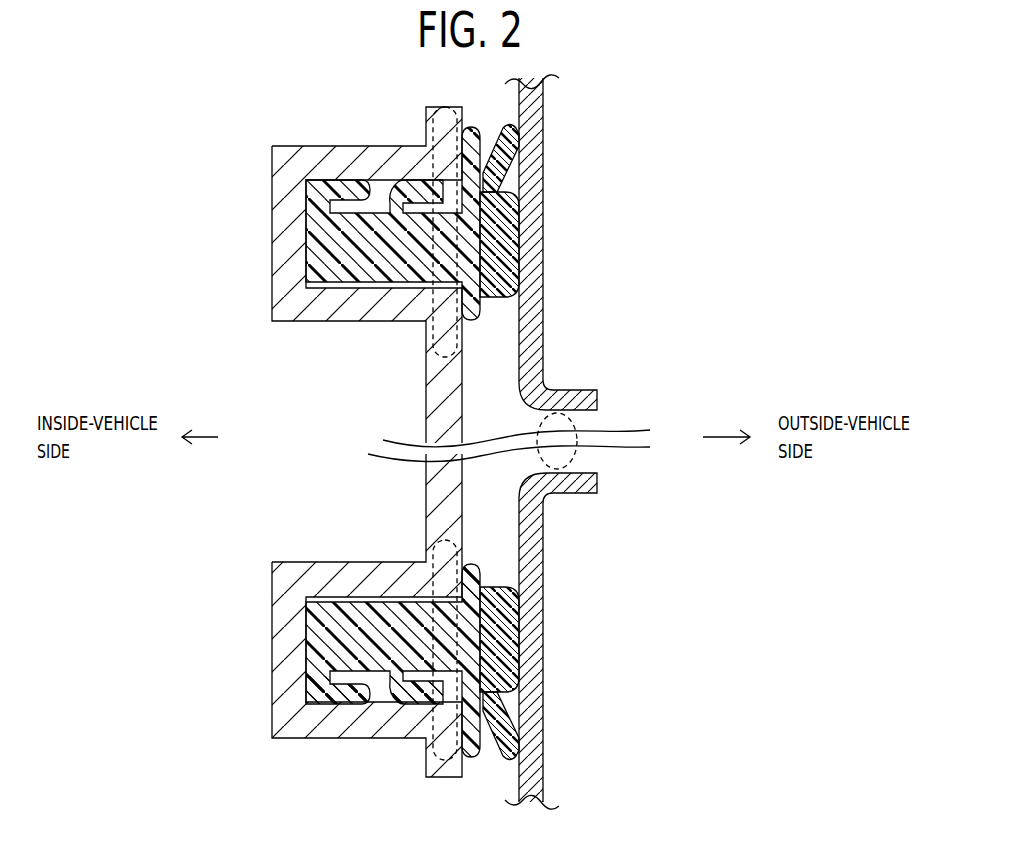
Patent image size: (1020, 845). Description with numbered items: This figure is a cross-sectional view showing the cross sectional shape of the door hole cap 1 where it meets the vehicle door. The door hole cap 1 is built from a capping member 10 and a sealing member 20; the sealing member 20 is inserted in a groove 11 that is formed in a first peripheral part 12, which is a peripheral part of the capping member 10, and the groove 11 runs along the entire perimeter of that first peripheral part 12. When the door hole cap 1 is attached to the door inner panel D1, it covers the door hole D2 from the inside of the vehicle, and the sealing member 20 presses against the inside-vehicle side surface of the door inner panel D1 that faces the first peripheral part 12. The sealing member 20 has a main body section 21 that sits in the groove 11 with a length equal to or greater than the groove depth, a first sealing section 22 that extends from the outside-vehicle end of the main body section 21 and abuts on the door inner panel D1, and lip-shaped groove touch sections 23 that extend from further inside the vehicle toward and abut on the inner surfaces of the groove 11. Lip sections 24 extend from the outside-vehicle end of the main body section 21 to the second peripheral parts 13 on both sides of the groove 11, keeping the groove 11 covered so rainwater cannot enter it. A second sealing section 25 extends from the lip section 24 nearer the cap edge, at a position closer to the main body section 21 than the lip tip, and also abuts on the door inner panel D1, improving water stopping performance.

The door hole cap 1 is at (133, 355).
The capping member 10 is at (290, 231).
The groove 11 is at (283, 596).
The first peripheral part 12 is at (427, 132).
The second peripheral parts 13 is at (427, 572).
The sealing member 20 is at (347, 257).
The main body section 21 is at (348, 642).
The first sealing section 22 is at (522, 635).
The groove touch sections 23 is at (370, 683).
The lip sections 24 is at (463, 578).
The second sealing section 25 is at (505, 727).
The door inner panel D1 is at (535, 165).
The door hole D2 is at (565, 428).